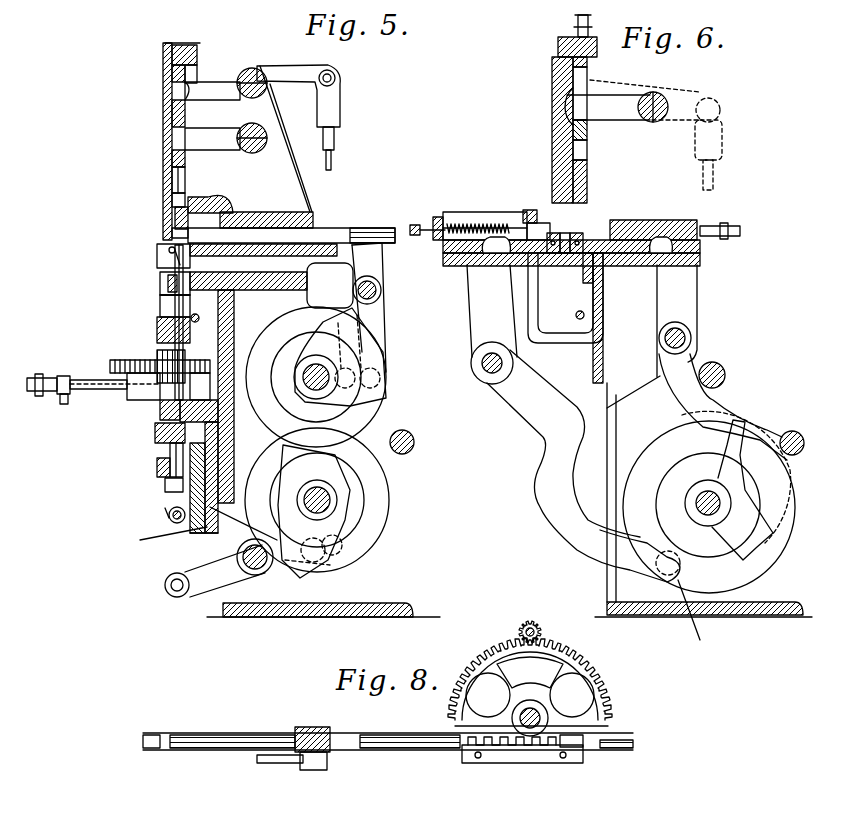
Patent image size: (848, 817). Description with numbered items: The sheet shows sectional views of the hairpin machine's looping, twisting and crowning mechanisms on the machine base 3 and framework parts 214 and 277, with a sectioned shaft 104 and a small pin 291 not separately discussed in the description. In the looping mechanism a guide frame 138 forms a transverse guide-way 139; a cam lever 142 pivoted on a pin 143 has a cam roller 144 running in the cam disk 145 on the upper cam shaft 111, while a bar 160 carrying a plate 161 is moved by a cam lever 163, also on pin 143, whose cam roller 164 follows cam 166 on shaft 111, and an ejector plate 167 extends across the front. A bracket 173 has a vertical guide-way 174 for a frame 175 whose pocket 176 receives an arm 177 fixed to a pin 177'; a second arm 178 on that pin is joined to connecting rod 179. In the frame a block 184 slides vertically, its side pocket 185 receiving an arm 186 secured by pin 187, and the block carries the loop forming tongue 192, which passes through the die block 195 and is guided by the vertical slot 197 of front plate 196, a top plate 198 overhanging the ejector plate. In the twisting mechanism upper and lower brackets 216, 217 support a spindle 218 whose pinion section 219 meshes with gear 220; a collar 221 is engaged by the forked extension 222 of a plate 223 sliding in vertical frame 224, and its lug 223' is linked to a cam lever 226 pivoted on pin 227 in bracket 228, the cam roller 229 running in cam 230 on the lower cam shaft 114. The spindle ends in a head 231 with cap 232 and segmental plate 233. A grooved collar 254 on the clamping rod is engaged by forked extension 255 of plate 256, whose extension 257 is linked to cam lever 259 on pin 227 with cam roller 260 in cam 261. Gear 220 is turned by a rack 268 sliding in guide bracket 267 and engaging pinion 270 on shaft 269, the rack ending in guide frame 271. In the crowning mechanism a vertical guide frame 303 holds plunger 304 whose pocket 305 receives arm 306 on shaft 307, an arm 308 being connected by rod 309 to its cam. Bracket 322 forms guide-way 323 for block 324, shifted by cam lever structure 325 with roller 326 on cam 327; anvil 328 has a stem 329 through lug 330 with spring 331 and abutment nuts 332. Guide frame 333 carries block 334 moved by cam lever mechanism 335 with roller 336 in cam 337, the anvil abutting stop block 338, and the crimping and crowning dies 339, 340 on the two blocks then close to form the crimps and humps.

In FIG. 5, the base 3 is at (355, 600).
In FIG. 6, the base 3 is at (628, 592).
In FIG. 5, the pin 104 is at (416, 443).
In FIG. 6, the pin 104 is at (776, 450).
In FIG. 5, the cam shaft 111 is at (332, 372).
In FIG. 6, the cam shaft 111 is at (728, 378).
In FIG. 5, the lower cam shaft 114 is at (330, 495).
In FIG. 6, the lower cam shaft 114 is at (720, 495).
In FIG. 5, the guide frame 138 is at (165, 262).
In FIG. 5, the transverse guide-way 139 is at (160, 292).
In FIG. 5, the cam lever 142 is at (380, 328).
In FIG. 5, the pin 143 is at (382, 296).
In FIG. 5, the cam roller 144 is at (383, 383).
In FIG. 5, the cam disk 145 is at (365, 422).
In FIG. 5, the bar 160 is at (330, 240).
In FIG. 5, the plate 161 is at (312, 214).
In FIG. 5, the cam lever 163 is at (348, 310).
In FIG. 5, the cam roller 164 is at (357, 360).
In FIG. 5, the cam 166 is at (340, 364).
In FIG. 5, the ejector plate 167 is at (263, 243).
In FIG. 5, the bracket 173 is at (300, 178).
In FIG. 5, the vertical guide-way 174 is at (196, 52).
In FIG. 5, the frame 175 is at (163, 68).
In FIG. 5, the pocket 176 is at (172, 96).
In FIG. 5, the arm 177 is at (212, 100).
In FIG. 5, the pin 177' is at (257, 69).
In FIG. 5, the arm 178 is at (292, 66).
In FIG. 5, the connecting rod 179 is at (334, 148).
In FIG. 5, the block 184 is at (172, 128).
In FIG. 5, the side pocket 185 is at (172, 152).
In FIG. 5, the arm 186 is at (225, 146).
In FIG. 5, the pin 187 is at (258, 152).
In FIG. 5, the loop forming tongue 192 is at (172, 198).
In FIG. 5, the die block 195 is at (175, 220).
In FIG. 5, the front plate 196 is at (165, 48).
In FIG. 5, the vertical slot 197 is at (172, 175).
In FIG. 5, the top plate 198 is at (212, 205).
In FIG. 5, the plate 214 is at (172, 234).
In FIG. 5, the upper bracket 216 is at (157, 334).
In FIG. 5, the lower bracket 217 is at (160, 412).
In FIG. 5, the spindle 218 is at (127, 396).
In FIG. 8, the spindle 218 is at (514, 628).
In FIG. 5, the pinion section 219 is at (157, 357).
In FIG. 8, the pinion section 219 is at (540, 630).
In FIG. 5, the gear 220 is at (110, 362).
In FIG. 8, the gear 220 is at (590, 668).
In FIG. 5, the collar 221 is at (160, 438).
In FIG. 5, the forked extension 222 is at (165, 443).
In FIG. 5, the plate 223 is at (235, 477).
In FIG. 5, the lug 223' is at (142, 518).
In FIG. 5, the vertical frame 224 is at (212, 462).
In FIG. 5, the cam lever 226 is at (188, 570).
In FIG. 5, the pin 227 is at (257, 568).
In FIG. 5, the bracket 228 is at (258, 540).
In FIG. 5, the cam roller 229 is at (348, 545).
In FIG. 5, the cam 230 is at (368, 508).
In FIG. 5, the head 231 is at (165, 302).
In FIG. 5, the cap 232 is at (160, 282).
In FIG. 5, the segmental plate 233 is at (157, 255).
In FIG. 5, the grooved collar 254 is at (165, 466).
In FIG. 5, the forked extension 255 is at (165, 485).
In FIG. 5, the plate 256 is at (190, 500).
In FIG. 5, the extension 257 is at (140, 540).
In FIG. 5, the cam lever 259 is at (205, 588).
In FIG. 5, the cam roller 260 is at (350, 568).
In FIG. 5, the cam 261 is at (322, 578).
In FIG. 8, the guide bracket 267 is at (546, 763).
In FIG. 8, the rack 268 is at (575, 745).
In FIG. 8, the shaft 269 is at (525, 740).
In FIG. 8, the pinion 270 is at (538, 742).
In FIG. 8, the guide frame 271 is at (385, 750).
In FIG. 5, the wall 277 is at (236, 297).
In FIG. 6, the wall 277 is at (590, 292).
In FIG. 5, the pin 291 is at (206, 311).
In FIG. 6, the pin 291 is at (576, 316).
In FIG. 6, the vertical guide frame 303 is at (587, 173).
In FIG. 6, the plunger 304 is at (590, 65).
In FIG. 6, the pocket 305 is at (563, 110).
In FIG. 6, the arm 306 is at (632, 122).
In FIG. 6, the shaft 307 is at (665, 98).
In FIG. 6, the arm 308 is at (668, 112).
In FIG. 6, the rod 309 is at (715, 185).
In FIG. 6, the bracket 322 is at (557, 383).
In FIG. 6, the transverse guide-way 323 is at (462, 266).
In FIG. 6, the block 324 is at (528, 210).
In FIG. 6, the cam lever structure 325 is at (540, 473).
In FIG. 6, the cam roller 326 is at (699, 619).
In FIG. 6, the cam 327 is at (755, 578).
In FIG. 6, the anvil 328 is at (540, 224).
In FIG. 6, the stem 329 is at (455, 222).
In FIG. 6, the lug 330 is at (438, 216).
In FIG. 6, the spring 331 is at (468, 224).
In FIG. 6, the abutment nuts 332 is at (414, 222).
In FIG. 6, the guide frame 333 is at (700, 222).
In FIG. 6, the block 334 is at (616, 258).
In FIG. 6, the cam lever mechanism 335 is at (680, 300).
In FIG. 6, the cam roller 336 is at (762, 490).
In FIG. 6, the cam 337 is at (785, 433).
In FIG. 6, the stop block 338 is at (585, 236).
In FIG. 6, the crimping and crowning die 339 is at (558, 256).
In FIG. 6, the crimping and crowning die 340 is at (570, 233).